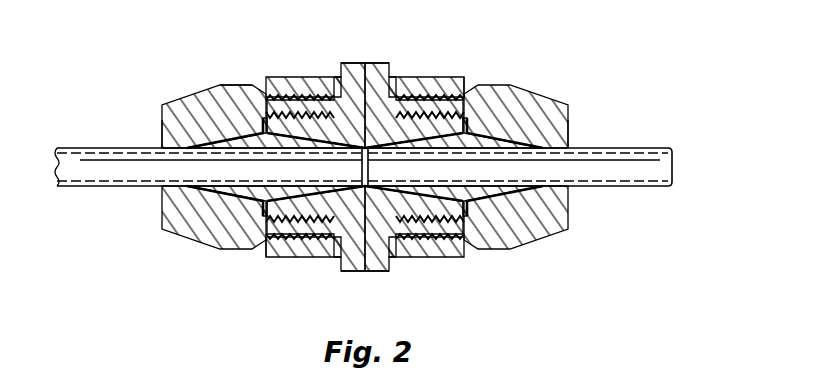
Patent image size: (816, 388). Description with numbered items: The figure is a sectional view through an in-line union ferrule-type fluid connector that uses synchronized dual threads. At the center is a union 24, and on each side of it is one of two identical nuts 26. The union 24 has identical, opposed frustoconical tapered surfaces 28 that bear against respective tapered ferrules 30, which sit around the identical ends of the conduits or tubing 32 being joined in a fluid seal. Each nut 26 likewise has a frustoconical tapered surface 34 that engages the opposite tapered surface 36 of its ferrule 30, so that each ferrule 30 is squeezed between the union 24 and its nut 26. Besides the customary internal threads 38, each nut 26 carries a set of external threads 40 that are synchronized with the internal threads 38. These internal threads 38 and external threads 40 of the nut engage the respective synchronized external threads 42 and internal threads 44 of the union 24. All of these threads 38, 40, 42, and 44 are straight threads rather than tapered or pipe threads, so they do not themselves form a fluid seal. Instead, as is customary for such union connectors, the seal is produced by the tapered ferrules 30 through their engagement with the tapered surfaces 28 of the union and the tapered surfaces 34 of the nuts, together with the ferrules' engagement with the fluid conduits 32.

The union 24 is at (380, 272).
The nut 26 is at (142, 230).
The frustoconical tapered surface 28 is at (352, 70).
The tapered ferrule 30 is at (483, 130).
The conduit 32 is at (90, 147).
The frustoconical tapered surface 34 is at (178, 135).
The tapered surface 36 is at (240, 85).
The internal threads 38 is at (418, 95).
The external threads 40 is at (452, 80).
The external threads 42 is at (288, 76).
The internal threads 44 is at (314, 94).